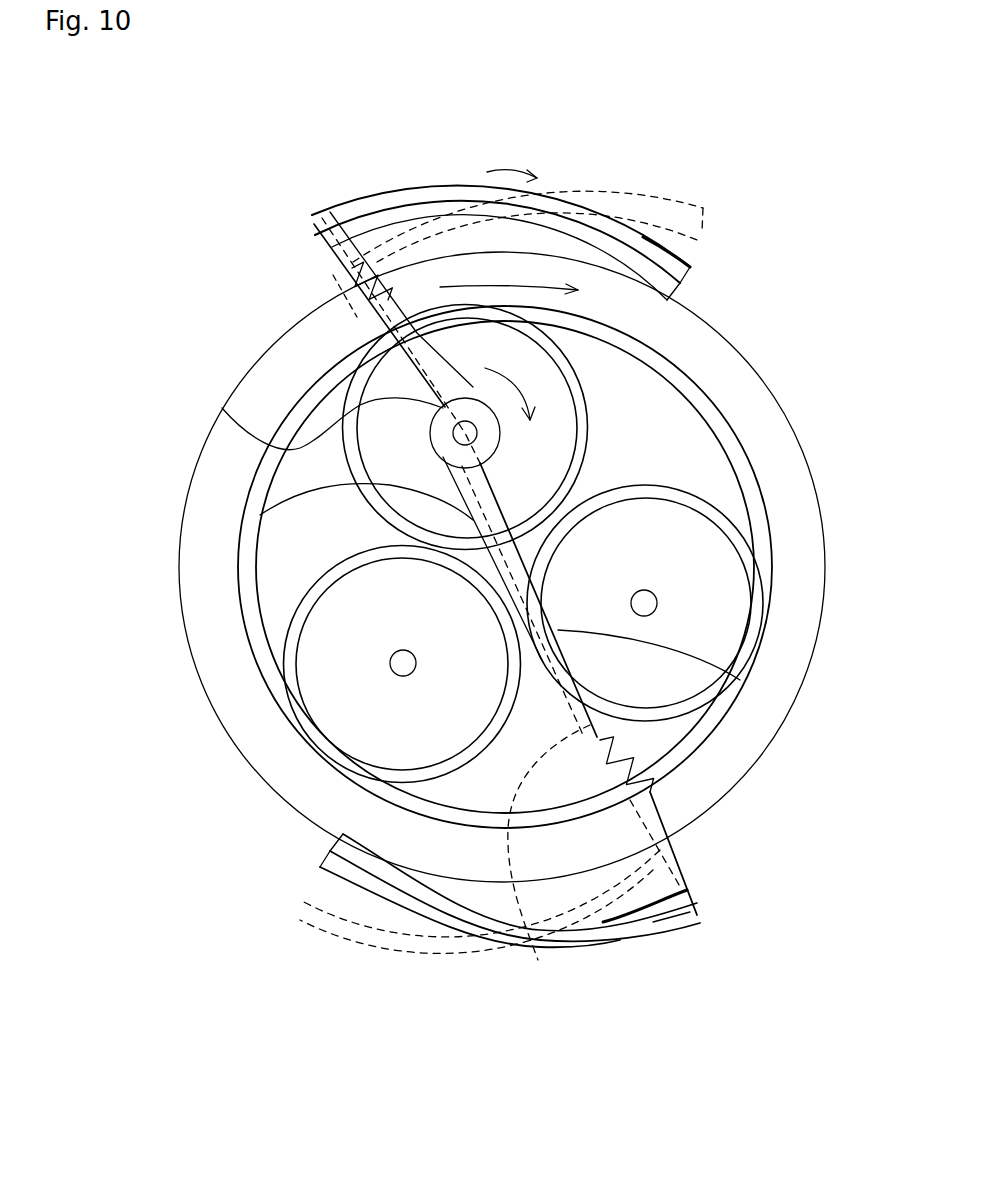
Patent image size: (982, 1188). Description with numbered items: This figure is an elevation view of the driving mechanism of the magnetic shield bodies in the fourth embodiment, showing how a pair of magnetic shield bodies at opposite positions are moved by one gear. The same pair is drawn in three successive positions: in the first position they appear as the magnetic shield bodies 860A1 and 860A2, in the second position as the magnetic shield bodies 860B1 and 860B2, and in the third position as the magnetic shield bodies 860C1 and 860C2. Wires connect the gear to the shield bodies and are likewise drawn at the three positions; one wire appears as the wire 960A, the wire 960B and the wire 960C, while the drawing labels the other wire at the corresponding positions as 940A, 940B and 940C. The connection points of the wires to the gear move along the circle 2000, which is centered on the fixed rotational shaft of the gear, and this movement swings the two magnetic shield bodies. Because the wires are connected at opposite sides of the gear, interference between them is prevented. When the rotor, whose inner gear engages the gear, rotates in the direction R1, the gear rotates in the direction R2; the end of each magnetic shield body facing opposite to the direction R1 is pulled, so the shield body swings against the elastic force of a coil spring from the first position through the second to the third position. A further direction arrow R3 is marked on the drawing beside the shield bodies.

The circle 2000 is at (222, 408).
The friction pad (position A) 940A is at (307, 225).
The friction pad (position B) 940B is at (332, 248).
The friction pad (position C) 940C is at (366, 327).
The magnetic shield body 860A1 is at (668, 300).
The magnetic shield body 860B1 is at (690, 270).
The magnetic shield body 860C1 is at (703, 208).
The magnetic shield body 860A2 is at (337, 842).
The magnetic shield body 860B2 is at (320, 863).
The magnetic shield body 860C2 is at (300, 917).
The wire 960A is at (740, 680).
The wire 960B is at (260, 515).
The wire 960C is at (538, 960).
The rotor rotation direction R1 is at (543, 295).
The gear rotation direction R2 is at (532, 411).
The rotation direction R3 is at (512, 156).